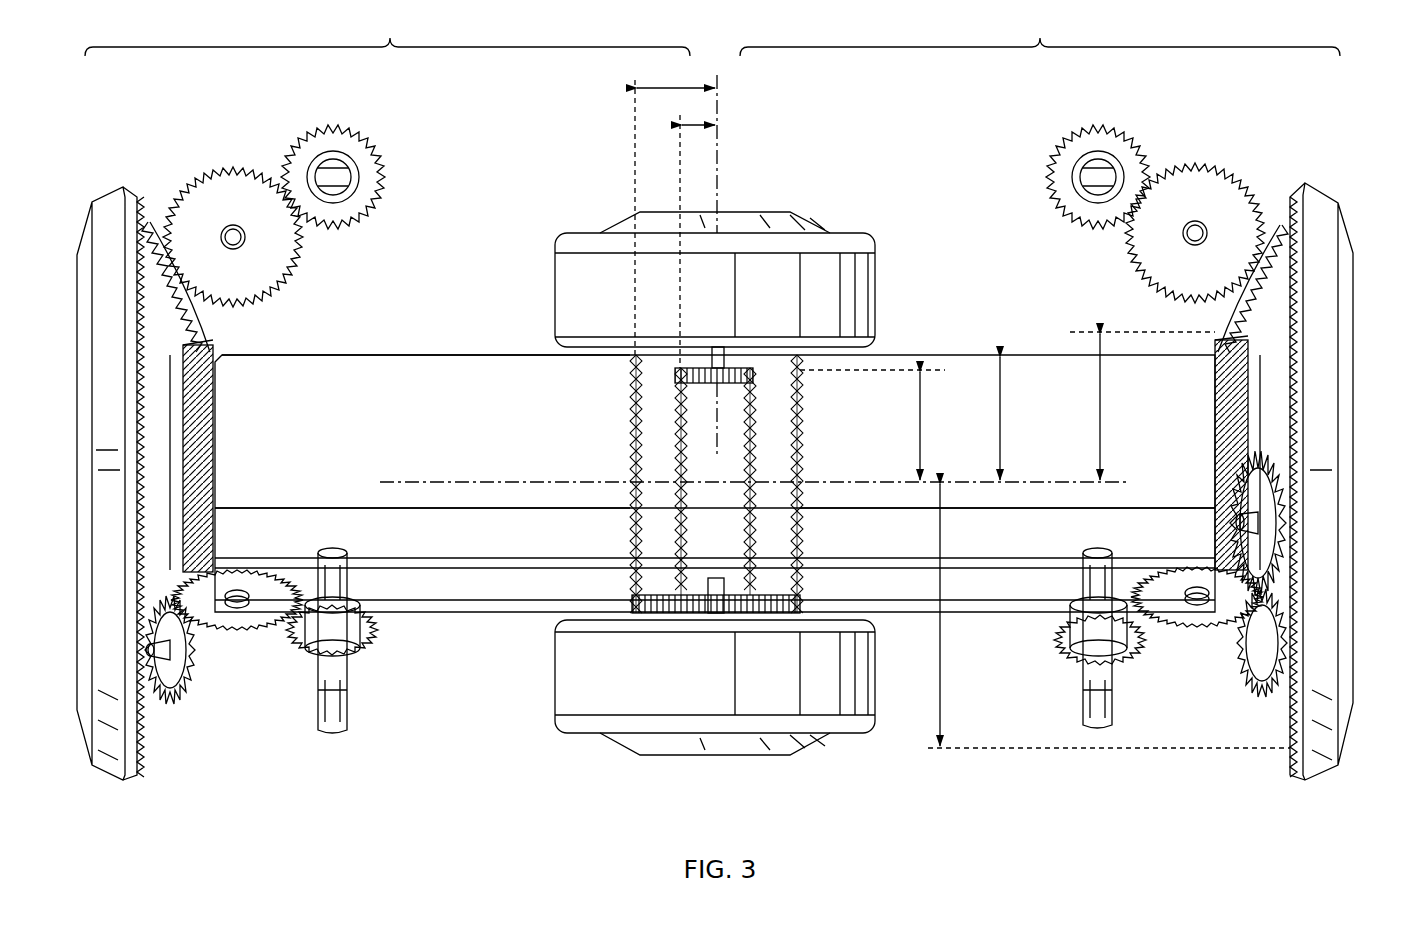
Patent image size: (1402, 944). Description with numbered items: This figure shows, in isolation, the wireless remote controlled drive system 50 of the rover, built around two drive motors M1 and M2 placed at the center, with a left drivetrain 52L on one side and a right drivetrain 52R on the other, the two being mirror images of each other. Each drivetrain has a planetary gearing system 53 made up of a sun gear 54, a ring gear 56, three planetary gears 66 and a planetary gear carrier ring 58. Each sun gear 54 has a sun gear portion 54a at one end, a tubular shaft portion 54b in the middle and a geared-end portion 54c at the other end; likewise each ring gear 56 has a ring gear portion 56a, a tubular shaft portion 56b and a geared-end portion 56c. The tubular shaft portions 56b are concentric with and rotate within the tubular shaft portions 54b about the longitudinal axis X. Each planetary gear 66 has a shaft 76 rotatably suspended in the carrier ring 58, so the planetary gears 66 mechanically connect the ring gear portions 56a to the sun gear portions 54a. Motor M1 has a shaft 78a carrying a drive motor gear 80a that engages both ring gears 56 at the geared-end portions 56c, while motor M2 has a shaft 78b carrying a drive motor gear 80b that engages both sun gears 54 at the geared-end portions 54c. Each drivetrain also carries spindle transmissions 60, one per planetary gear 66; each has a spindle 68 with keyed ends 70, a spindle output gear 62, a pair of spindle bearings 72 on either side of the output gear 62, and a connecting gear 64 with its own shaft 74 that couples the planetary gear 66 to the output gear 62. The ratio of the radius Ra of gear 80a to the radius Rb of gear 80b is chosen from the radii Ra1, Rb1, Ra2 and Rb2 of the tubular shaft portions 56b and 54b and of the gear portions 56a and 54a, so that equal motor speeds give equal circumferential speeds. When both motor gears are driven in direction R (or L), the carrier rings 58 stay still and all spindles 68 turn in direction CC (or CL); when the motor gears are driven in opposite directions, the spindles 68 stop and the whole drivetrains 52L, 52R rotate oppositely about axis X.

The wireless remote controlled drive system 50 is at (1072, 822).
The left drivetrain 52L is at (387, 30).
The right drivetrain 52R is at (1040, 30).
The planetary gearing system 53 is at (437, 228).
The sun gear 54 is at (407, 350).
The sun gear portion 54a is at (222, 352).
The tubular shaft portion 54b is at (482, 375).
The geared-end portion 54c is at (630, 523).
The ring gear 56 is at (655, 395).
The ring gear portion 56a is at (100, 772).
The tubular shaft portion 56b is at (642, 440).
The geared-end portion 56c is at (690, 563).
The planetary gear carrier ring 58 is at (195, 425).
The spindle transmission 60 is at (357, 112).
The spindle output gear 62 is at (340, 228).
The connecting gear 64 is at (205, 170).
The planetary gear 66 is at (160, 230).
The spindle 68 is at (336, 735).
The keyed ends 70 is at (340, 572).
The spindle bearings 72 is at (350, 195).
The shaft 74 is at (233, 246).
The shaft 76 is at (185, 655).
The shaft 78a is at (714, 360).
The shaft 78b is at (716, 578).
The drive motor gear 80a is at (740, 370).
The drive motor gear 80b is at (655, 612).
The drive motor M1 is at (876, 275).
The drive motor M2 is at (556, 655).
The radius Ra is at (690, 125).
The radius Rb is at (672, 88).
The radius Ra1 is at (875, 425).
The radius Rb1 is at (1002, 418).
The radius Ra2 is at (1142, 406).
The radius Rb2 is at (1104, 616).
The direction R is at (695, 172).
The direction L is at (700, 440).
The longitudinal axis X is at (422, 480).
The direction CC is at (288, 130).
The direction CL is at (398, 178).